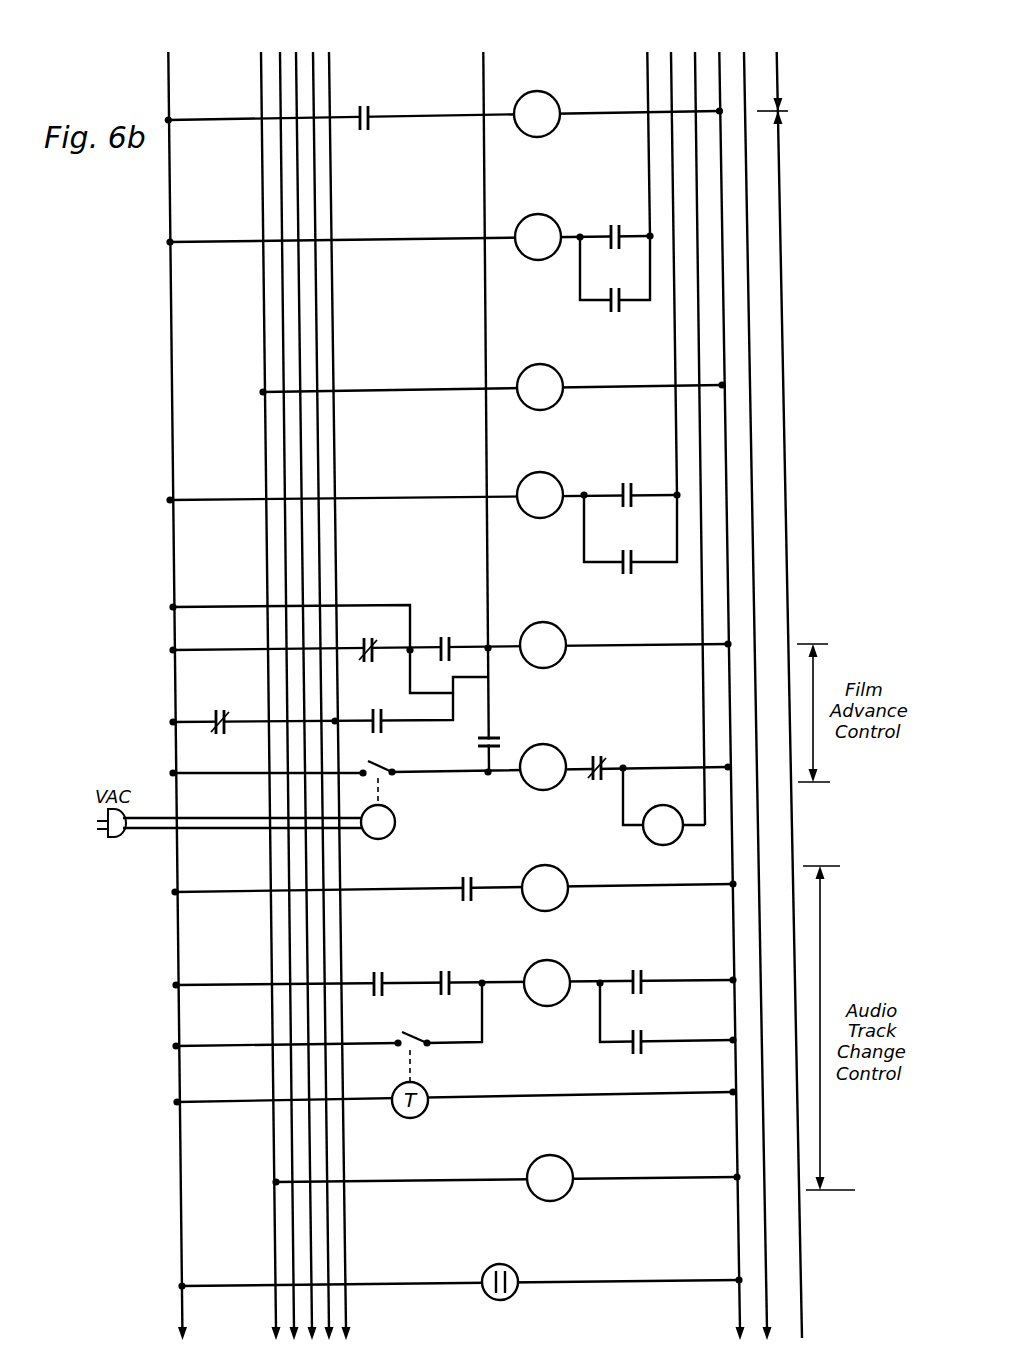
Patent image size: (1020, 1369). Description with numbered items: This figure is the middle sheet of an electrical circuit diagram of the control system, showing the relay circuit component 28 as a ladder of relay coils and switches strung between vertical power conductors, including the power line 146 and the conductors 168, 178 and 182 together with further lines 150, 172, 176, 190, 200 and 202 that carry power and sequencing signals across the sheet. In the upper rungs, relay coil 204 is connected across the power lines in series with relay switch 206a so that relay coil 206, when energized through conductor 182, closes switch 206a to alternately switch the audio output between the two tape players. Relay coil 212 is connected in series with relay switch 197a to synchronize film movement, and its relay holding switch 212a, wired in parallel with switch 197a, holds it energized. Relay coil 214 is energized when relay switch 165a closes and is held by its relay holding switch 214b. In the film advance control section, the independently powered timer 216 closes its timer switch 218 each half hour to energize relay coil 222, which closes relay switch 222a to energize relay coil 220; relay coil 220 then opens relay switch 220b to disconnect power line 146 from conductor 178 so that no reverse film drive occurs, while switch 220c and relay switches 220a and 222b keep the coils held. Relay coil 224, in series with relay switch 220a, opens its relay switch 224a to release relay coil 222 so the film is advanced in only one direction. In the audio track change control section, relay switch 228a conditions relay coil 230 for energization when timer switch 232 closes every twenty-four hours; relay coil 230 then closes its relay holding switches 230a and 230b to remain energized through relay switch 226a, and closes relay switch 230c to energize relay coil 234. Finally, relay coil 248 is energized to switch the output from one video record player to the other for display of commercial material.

The relay circuit component 28 is at (833, 481).
The power line 146 is at (172, 552).
The line 150 is at (724, 420).
The relay switch 165a is at (653, 582).
The conductor 168 is at (297, 582).
The line 172 is at (281, 313).
The line 176 is at (751, 313).
The conductor 178 is at (332, 352).
The conductor 182 is at (277, 1238).
The line 190 is at (320, 555).
The relay switch 197a is at (608, 303).
The line 200 is at (484, 427).
The line 202 is at (697, 80).
The relay coil 204 is at (552, 103).
The relay coil 206 is at (558, 402).
The relay switch 206a is at (370, 126).
The relay coil 212 is at (523, 258).
The relay holding switch 212a is at (607, 232).
The relay coil 214 is at (535, 516).
The relay holding switch 214b is at (618, 490).
The timer 216 is at (395, 821).
The timer switch 218 is at (379, 763).
The relay coil 220 is at (565, 655).
The relay switch 220a is at (441, 640).
The relay switch 220b is at (218, 718).
The relay E contacts 220c is at (367, 640).
The relay coil 222 is at (562, 752).
The relay switch 222a is at (368, 718).
The relay switch 222b is at (496, 738).
The relay coil 224 is at (650, 838).
The relay switch 224a is at (602, 763).
The relay switch 226a is at (387, 978).
The relay switch 228a is at (645, 988).
The relay coil 230 is at (560, 967).
The relay holding switch 230a is at (452, 978).
The relay holding switch 230b is at (628, 1048).
The relay switch 230c is at (463, 880).
The timer switch 232 is at (407, 1033).
The relay coil 234 is at (562, 852).
The relay coil 248 is at (570, 1168).